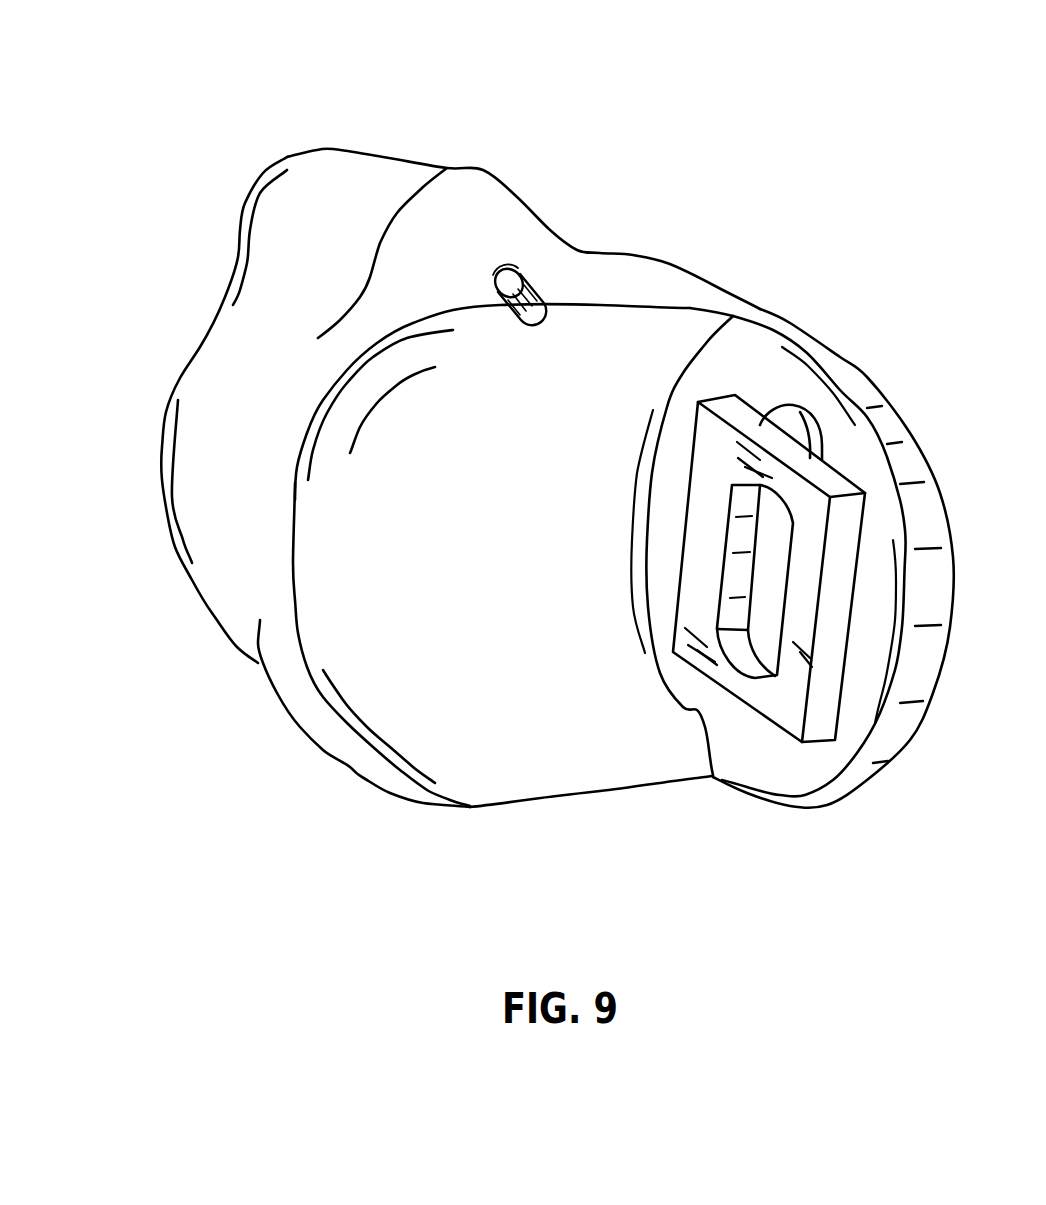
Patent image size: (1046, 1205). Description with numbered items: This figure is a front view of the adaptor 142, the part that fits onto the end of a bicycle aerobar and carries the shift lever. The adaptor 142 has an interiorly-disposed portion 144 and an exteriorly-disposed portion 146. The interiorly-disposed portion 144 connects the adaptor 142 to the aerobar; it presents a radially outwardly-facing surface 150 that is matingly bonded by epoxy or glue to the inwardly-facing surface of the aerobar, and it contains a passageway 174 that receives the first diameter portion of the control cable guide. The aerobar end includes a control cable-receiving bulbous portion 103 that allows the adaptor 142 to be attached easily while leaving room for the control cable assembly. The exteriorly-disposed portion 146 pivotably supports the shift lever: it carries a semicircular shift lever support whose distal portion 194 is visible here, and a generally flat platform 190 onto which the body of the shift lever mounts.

The control cable-receiving bulbous portion 103 is at (286, 157).
The adaptor 142 is at (482, 110).
The interiorly-disposed portion 144 is at (213, 502).
The exteriorly-disposed portion 146 is at (570, 752).
The radially outwardly-facing surface 150 is at (509, 566).
The passageway 174 is at (527, 280).
The flat platform 190 is at (773, 707).
The distal portion 194 is at (757, 337).